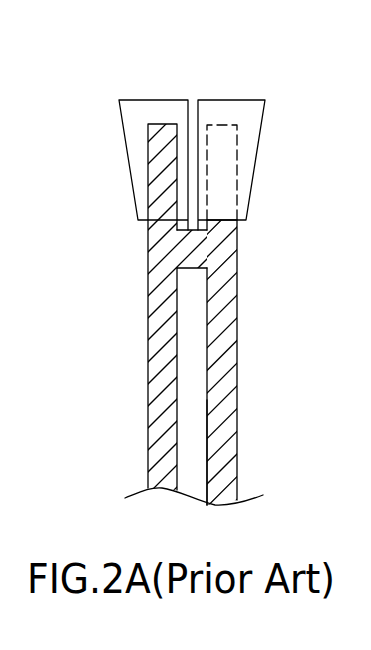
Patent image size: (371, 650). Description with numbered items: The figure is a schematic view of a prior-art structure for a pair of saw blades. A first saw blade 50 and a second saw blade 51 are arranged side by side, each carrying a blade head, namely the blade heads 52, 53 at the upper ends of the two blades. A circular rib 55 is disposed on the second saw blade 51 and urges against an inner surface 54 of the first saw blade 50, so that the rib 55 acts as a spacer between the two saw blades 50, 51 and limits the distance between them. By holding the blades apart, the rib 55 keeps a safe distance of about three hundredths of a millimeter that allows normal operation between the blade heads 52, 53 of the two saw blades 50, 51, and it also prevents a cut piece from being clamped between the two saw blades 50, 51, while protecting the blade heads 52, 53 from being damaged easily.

The first saw blade 50 is at (228, 406).
The second saw blade 51 is at (150, 352).
The blade head 52 is at (248, 167).
The blade head 53 is at (160, 110).
The inner surface 54 is at (209, 462).
The circular rib 55 is at (188, 251).